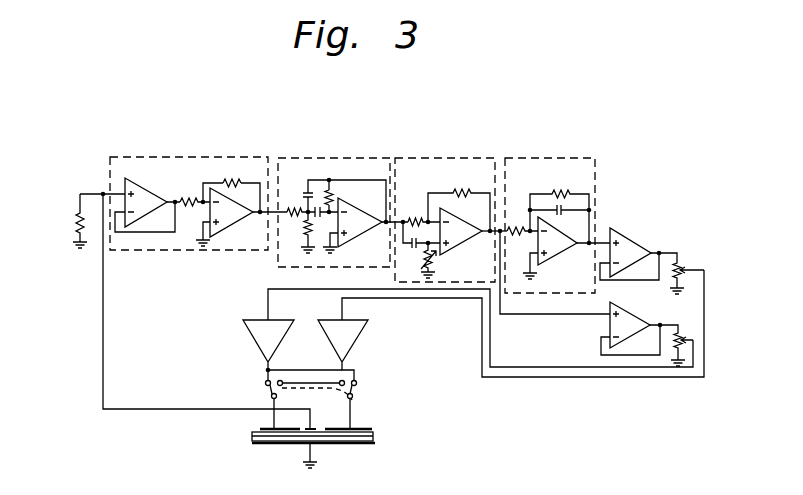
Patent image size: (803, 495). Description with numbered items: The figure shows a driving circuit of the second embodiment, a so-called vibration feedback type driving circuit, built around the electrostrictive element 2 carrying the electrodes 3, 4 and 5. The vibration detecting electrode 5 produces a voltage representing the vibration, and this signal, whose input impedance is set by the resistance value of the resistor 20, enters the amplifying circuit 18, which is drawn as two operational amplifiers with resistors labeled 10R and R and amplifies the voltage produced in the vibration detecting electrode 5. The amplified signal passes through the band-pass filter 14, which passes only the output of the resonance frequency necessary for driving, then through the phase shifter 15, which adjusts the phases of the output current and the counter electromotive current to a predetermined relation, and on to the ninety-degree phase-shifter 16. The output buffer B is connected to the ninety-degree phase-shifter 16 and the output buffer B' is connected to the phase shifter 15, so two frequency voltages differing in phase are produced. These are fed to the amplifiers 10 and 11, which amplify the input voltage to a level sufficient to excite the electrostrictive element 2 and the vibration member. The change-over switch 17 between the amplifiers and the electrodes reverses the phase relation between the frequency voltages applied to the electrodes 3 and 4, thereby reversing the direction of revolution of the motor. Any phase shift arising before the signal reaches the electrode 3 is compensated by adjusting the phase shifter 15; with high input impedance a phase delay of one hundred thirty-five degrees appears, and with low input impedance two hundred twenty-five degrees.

The resistor 20 is at (80, 212).
The amplifying circuit 18 is at (225, 155).
The resistor 10R is at (191, 198).
The feedback resistor R is at (233, 169).
The band-pass filter 14 is at (346, 155).
The phase shifter 15 is at (450, 155).
The 90° phase-shifter 16 is at (555, 155).
The output buffer B is at (523, 292).
The output buffer B' is at (480, 328).
The amplifier 10 is at (283, 340).
The amplifier 11 is at (362, 332).
The change-over switch 17 is at (362, 394).
The electrode 3 is at (258, 425).
The electrode 4 is at (370, 427).
The vibration detecting electrode 5 is at (315, 428).
The electrostrictive element 2 is at (375, 442).